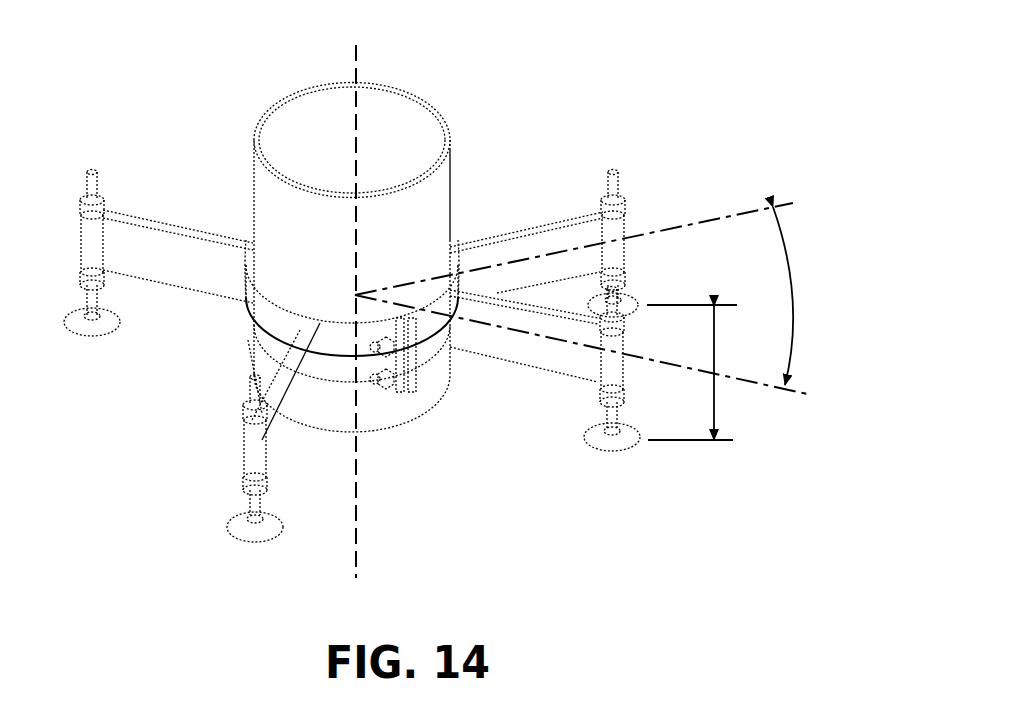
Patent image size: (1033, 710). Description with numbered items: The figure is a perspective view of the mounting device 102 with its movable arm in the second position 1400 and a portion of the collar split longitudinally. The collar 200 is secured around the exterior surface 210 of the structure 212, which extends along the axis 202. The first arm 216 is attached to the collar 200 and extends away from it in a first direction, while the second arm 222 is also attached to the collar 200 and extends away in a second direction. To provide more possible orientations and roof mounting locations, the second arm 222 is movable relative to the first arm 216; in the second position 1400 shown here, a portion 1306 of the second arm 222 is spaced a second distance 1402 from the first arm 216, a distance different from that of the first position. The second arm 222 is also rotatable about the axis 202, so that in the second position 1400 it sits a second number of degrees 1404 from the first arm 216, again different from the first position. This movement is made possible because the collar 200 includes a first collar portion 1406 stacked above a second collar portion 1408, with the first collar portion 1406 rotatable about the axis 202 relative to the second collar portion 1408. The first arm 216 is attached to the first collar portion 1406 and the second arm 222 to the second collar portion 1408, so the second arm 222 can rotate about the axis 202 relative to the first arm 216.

The mounting device 102 is at (196, 130).
The collar 200 is at (230, 367).
The axis 202 is at (357, 513).
The exterior surface 210 is at (255, 178).
The structure 212 is at (314, 90).
The first arm 216 is at (482, 403).
The second arm 222 is at (502, 148).
The portion of the second arm 1306 is at (642, 288).
The second position 1400 is at (622, 138).
The second distance 1402 is at (718, 412).
The second number of degrees 1404 is at (785, 240).
The first collar portion 1406 is at (257, 320).
The second collar portion 1408 is at (252, 340).